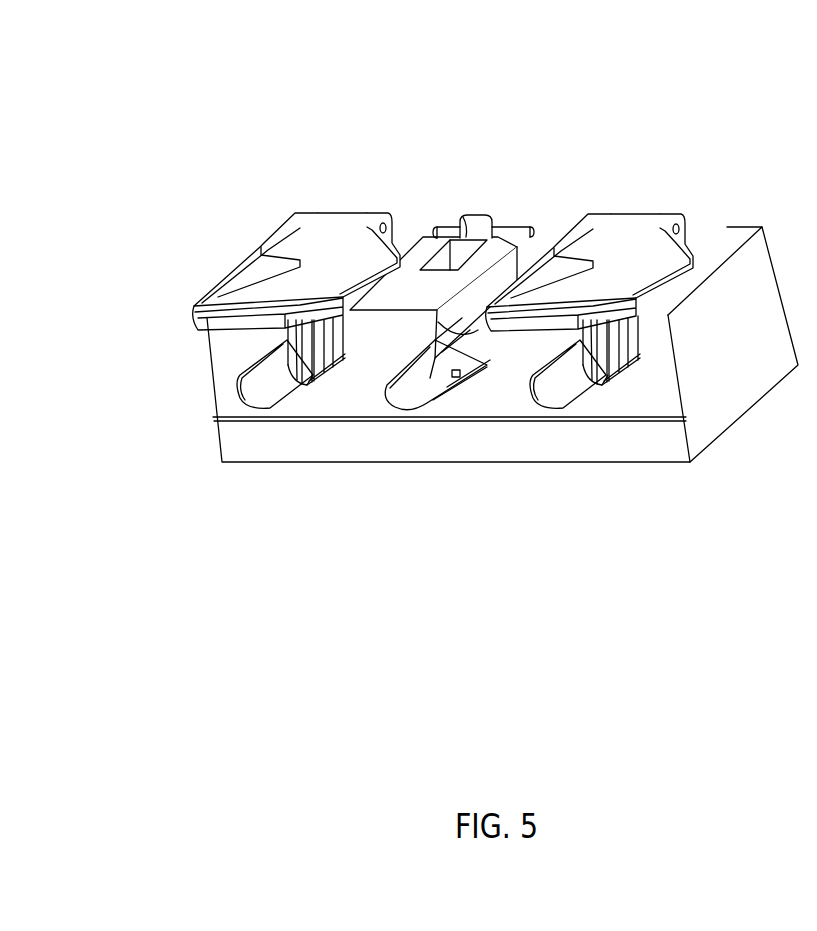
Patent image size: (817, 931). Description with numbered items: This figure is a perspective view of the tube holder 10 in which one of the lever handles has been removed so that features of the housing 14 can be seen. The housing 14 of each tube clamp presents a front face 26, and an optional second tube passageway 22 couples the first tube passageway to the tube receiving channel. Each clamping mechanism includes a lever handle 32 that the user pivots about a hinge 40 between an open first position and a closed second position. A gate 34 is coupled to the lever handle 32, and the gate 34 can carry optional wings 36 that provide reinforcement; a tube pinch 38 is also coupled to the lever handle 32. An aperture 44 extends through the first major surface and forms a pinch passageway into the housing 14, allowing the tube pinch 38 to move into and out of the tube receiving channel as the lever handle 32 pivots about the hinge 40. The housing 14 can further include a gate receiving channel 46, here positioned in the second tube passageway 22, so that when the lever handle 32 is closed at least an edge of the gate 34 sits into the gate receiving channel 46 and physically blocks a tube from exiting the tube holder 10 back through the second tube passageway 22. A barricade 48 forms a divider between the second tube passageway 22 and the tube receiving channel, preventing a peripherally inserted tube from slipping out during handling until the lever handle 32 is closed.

The tube holder 10 is at (112, 82).
The housing 14 is at (207, 370).
The second tube passageway 22 is at (328, 370).
The front face 26 is at (262, 388).
The lever handle 32 is at (337, 252).
The gate 34 is at (333, 330).
The wings 36 is at (296, 384).
The tube pinch 38 is at (286, 342).
The hinge 40 is at (335, 214).
The aperture 44 is at (478, 240).
The gate receiving channel 46 is at (467, 377).
The barricade 48 is at (428, 378).